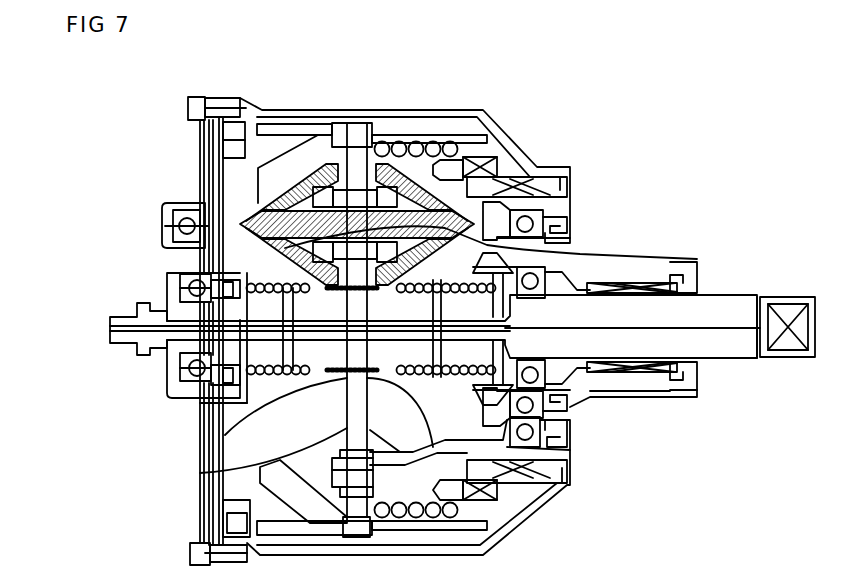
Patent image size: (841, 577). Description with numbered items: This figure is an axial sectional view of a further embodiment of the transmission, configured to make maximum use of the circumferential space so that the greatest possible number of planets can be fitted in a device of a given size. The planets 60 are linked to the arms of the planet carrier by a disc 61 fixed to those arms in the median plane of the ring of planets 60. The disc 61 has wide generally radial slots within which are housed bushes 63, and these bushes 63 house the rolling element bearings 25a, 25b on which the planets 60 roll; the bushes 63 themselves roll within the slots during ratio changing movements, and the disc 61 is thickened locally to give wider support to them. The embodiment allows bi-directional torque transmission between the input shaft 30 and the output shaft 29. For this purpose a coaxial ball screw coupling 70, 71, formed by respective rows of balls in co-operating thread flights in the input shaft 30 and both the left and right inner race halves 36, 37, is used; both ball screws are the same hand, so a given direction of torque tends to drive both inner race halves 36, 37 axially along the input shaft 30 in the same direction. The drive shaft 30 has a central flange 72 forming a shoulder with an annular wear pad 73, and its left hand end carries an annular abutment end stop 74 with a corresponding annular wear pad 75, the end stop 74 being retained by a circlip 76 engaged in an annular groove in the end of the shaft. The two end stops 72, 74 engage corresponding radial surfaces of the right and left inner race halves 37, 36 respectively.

The rolling element bearing 25a is at (262, 237).
The rolling element bearing 25b is at (580, 254).
The output shaft 29 is at (653, 390).
The input shaft 30 is at (738, 352).
The left inner race half 36 is at (250, 406).
The right inner race half 37 is at (407, 257).
The planet 60 is at (277, 200).
The disc 61 is at (250, 470).
The bush 63 is at (352, 200).
The ball screw coupling 70 is at (262, 372).
The ball screw coupling 71 is at (433, 372).
The central flange 72 is at (598, 290).
The annular wear pad 73 is at (505, 265).
The annular abutment end stop 74 is at (180, 285).
The annular wear pad 75 is at (240, 273).
The circlip 76 is at (185, 368).